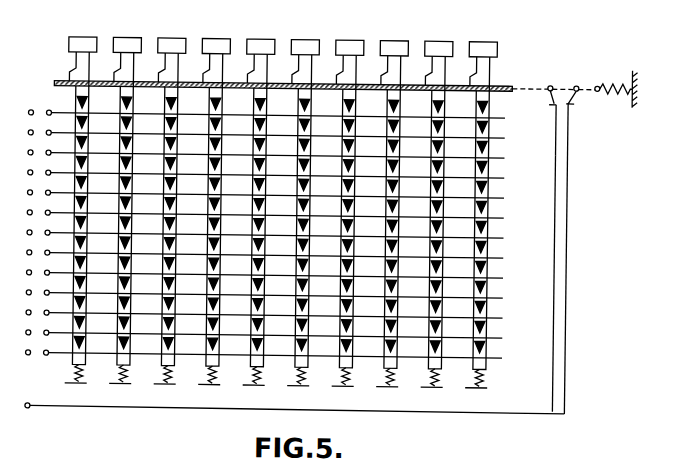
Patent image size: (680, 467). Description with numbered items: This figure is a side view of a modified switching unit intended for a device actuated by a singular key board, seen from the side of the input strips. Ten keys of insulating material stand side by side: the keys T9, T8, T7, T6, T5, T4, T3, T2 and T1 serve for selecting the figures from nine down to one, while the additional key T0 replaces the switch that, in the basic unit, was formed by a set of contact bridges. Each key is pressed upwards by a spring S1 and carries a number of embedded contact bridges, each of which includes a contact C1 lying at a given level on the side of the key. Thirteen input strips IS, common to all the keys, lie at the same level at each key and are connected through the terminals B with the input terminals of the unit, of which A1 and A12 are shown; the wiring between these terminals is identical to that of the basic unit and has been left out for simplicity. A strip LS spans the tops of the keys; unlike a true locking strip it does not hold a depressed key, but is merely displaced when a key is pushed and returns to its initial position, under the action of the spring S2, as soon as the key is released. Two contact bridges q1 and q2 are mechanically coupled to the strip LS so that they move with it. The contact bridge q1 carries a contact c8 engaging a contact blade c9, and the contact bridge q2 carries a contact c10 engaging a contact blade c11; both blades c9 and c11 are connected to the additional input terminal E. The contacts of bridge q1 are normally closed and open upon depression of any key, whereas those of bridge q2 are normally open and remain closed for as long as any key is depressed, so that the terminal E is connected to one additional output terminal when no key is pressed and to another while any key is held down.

The key T9 is at (84, 34).
The key T8 is at (128, 34).
The key T7 is at (173, 34).
The key T6 is at (218, 34).
The key T5 is at (262, 34).
The key T4 is at (306, 34).
The key T3 is at (351, 34).
The key T2 is at (396, 34).
The key T1 is at (440, 34).
The key T0 is at (484, 34).
The strip LS is at (508, 82).
The input strips IS is at (505, 296).
The terminals B is at (49, 110).
The input terminal A1 is at (31, 110).
The input terminal A12 is at (31, 356).
The additional input terminal E is at (32, 409).
The contact bridge q1 is at (552, 80).
The contact bridge q2 is at (578, 81).
The contact c8 is at (556, 144).
The contact blade c9 is at (553, 97).
The contact c10 is at (574, 98).
The contact blade c11 is at (568, 168).
The spring S1 is at (349, 377).
The spring S2 is at (612, 86).
The contact C1 is at (493, 346).